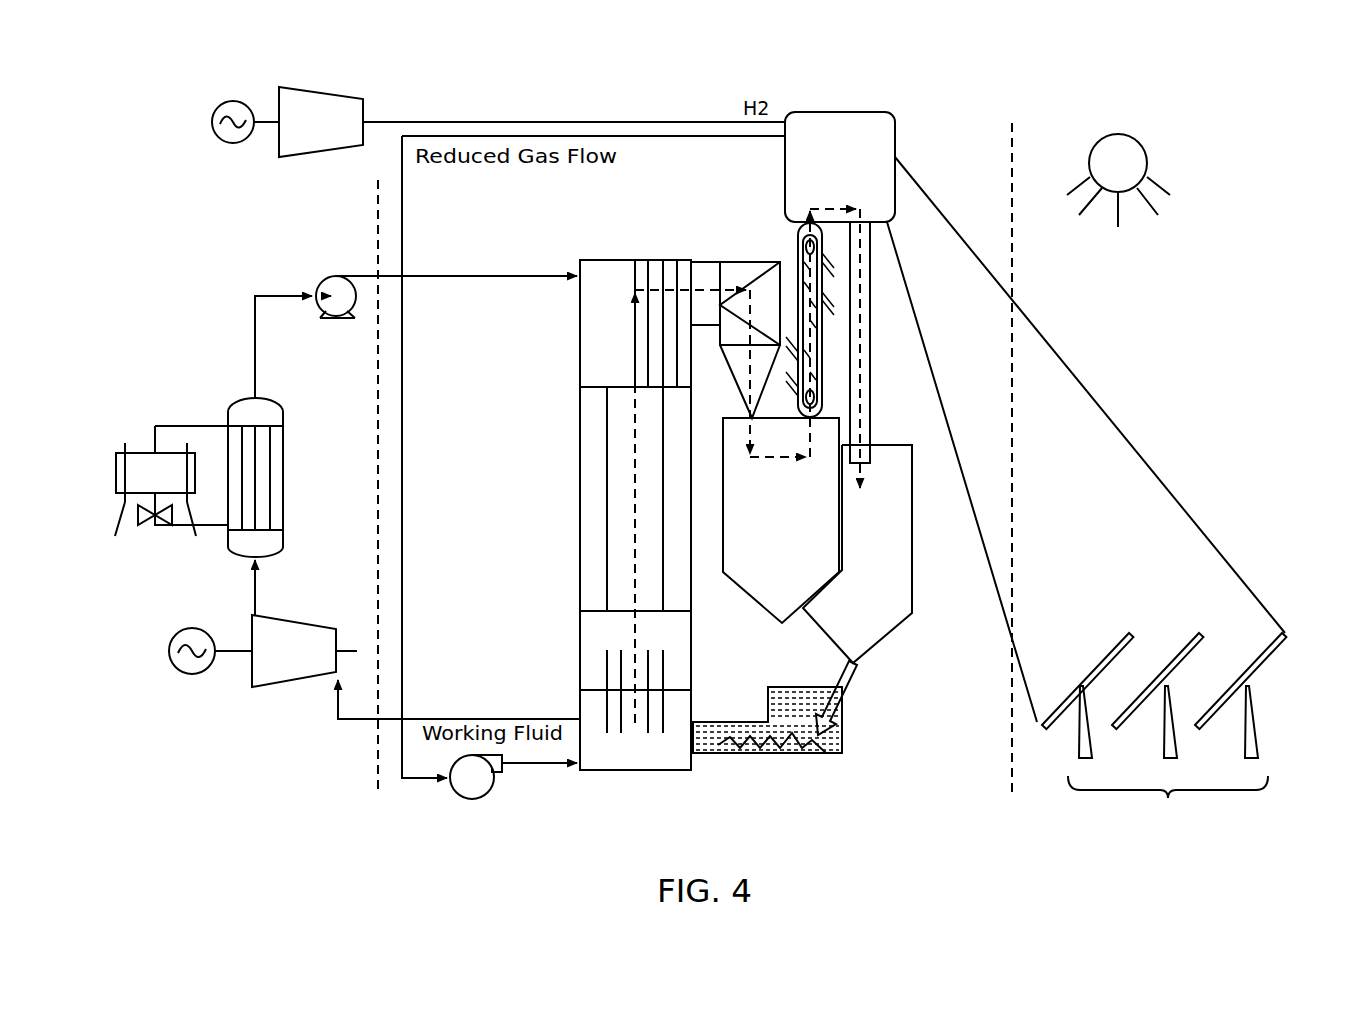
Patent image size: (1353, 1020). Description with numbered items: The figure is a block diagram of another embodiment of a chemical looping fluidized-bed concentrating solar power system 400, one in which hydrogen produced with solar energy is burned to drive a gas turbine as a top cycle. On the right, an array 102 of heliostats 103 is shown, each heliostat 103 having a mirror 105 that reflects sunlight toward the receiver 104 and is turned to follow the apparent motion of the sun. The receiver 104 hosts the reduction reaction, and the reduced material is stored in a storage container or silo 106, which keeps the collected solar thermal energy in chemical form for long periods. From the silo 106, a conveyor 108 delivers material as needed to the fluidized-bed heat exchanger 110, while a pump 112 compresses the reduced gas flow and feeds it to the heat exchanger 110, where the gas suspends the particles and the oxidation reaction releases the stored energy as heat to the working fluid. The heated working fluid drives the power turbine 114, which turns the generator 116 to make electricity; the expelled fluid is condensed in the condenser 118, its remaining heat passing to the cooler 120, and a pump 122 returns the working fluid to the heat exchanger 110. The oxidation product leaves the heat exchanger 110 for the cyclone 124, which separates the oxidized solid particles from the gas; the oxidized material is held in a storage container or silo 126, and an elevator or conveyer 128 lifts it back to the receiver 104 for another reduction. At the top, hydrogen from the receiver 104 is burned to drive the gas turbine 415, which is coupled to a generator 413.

The chemical looping fluidized-bed concentrating solar power system 400 is at (198, 200).
The generator 413 is at (238, 101).
The gas turbine 415 is at (325, 88).
The receiver 104 is at (835, 112).
The elevator or conveyer 128 is at (800, 235).
The cyclone 124 is at (728, 262).
The fluidized-bed heat exchanger 110 is at (580, 490).
The pump 122 is at (325, 278).
The condenser 118 is at (247, 410).
The cooler 120 is at (138, 448).
The generator 116 is at (169, 651).
The power turbine 114 is at (296, 680).
The pump 112 is at (477, 798).
The storage container or silo 126 is at (755, 600).
The storage container or silo 106 is at (893, 630).
The conveyor 108 is at (828, 755).
The mirror 105 is at (1235, 683).
The heliostat 103 is at (1269, 691).
The array of heliostats 102 is at (1193, 727).